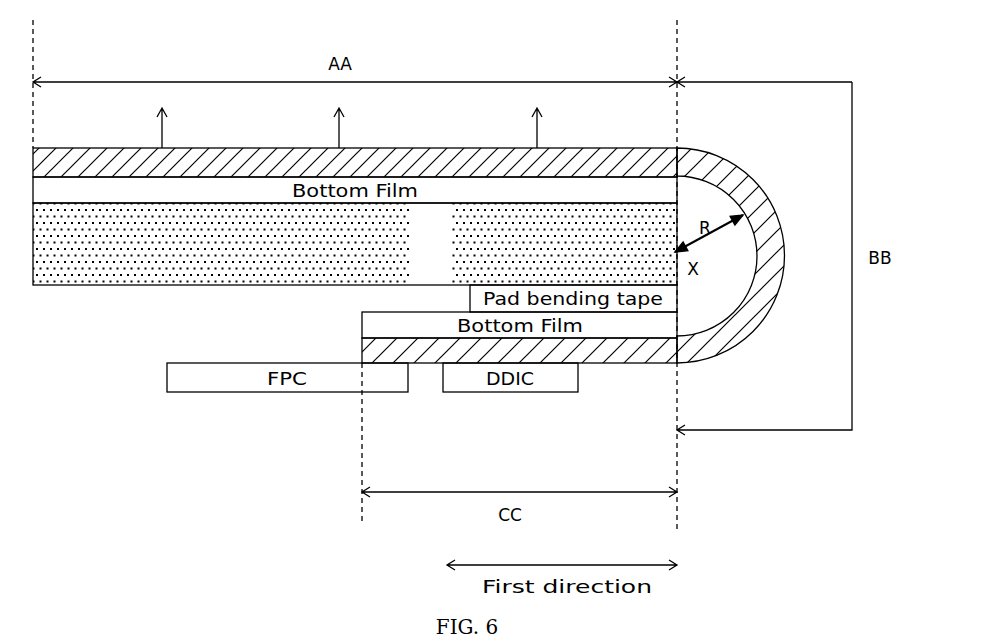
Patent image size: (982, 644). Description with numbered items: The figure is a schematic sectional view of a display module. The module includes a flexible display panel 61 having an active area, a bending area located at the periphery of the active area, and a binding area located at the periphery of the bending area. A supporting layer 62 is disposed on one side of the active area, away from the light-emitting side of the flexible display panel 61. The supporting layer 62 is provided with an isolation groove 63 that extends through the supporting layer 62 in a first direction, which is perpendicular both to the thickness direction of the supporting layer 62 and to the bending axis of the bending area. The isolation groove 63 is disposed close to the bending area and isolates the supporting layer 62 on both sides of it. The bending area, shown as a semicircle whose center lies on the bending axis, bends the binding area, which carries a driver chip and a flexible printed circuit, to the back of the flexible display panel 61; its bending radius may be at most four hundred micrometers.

The flexible display panel 61 is at (140, 163).
The supporting layer 62 is at (60, 248).
The isolation groove 63 is at (432, 248).